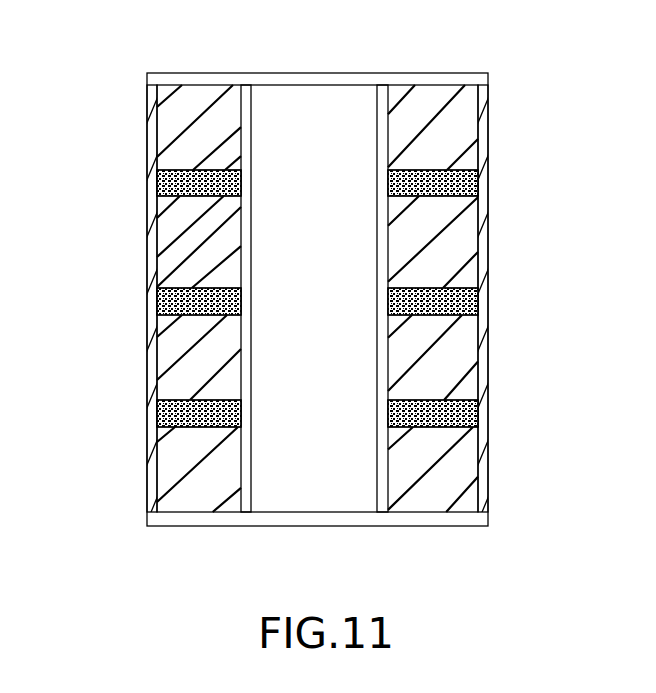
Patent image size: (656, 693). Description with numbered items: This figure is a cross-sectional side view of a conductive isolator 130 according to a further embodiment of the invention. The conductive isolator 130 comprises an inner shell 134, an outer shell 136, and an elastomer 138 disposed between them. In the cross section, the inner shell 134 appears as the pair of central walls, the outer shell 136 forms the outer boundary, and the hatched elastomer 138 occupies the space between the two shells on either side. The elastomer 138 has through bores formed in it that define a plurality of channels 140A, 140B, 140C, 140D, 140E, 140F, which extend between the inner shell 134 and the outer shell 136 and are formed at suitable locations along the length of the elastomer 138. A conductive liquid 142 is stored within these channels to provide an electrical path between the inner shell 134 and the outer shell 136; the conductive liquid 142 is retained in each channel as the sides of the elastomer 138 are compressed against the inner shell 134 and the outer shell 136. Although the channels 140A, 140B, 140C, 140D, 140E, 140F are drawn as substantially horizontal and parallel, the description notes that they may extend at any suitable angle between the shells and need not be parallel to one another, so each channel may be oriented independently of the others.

The conductive isolator 130 is at (101, 572).
The inner shell 134 is at (388, 110).
The outer shell 136 is at (489, 97).
The elastomer 138 is at (186, 118).
The channel 140A is at (158, 186).
The channel 140B is at (480, 191).
The channel 140C is at (158, 303).
The channel 140D is at (480, 306).
The channel 140E is at (158, 416).
The channel 140F is at (480, 423).
The conductive liquid 142 is at (482, 156).